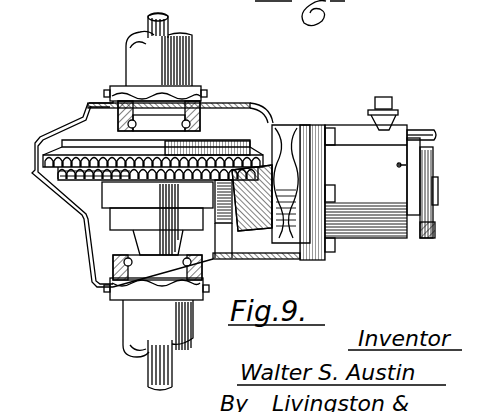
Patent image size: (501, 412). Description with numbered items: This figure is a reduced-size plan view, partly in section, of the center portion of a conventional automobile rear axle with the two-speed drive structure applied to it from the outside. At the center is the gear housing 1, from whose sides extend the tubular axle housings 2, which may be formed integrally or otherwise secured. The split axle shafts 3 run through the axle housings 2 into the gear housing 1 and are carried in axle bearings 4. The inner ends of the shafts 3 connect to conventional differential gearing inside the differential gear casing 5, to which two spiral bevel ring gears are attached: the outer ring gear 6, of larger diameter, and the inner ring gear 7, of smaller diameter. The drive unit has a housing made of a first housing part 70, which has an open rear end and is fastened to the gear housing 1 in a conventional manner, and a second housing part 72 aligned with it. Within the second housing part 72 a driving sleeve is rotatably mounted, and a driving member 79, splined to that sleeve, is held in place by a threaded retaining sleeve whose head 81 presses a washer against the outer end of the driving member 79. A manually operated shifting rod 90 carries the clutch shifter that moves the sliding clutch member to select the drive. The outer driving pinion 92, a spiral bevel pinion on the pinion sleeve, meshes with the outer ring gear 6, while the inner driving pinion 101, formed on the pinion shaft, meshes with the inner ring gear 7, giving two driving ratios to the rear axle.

The gear housing 1 is at (80, 235).
The axle housing 2 is at (138, 68).
The split axle shaft 3 is at (168, 34).
The axle bearing 4 is at (118, 125).
The differential gear casing 5 is at (128, 190).
The outer spiral bevel ring gear 6 is at (52, 157).
The inner spiral bevel ring gear 7 is at (56, 172).
The first housing part 70 is at (240, 103).
The second housing part 72 is at (373, 222).
The driving member 79 is at (435, 230).
The head of retaining sleeve 81 is at (438, 195).
The shifting rod 90 is at (412, 131).
The outer driving pinion 92 is at (258, 220).
The inner driving pinion 101 is at (244, 213).